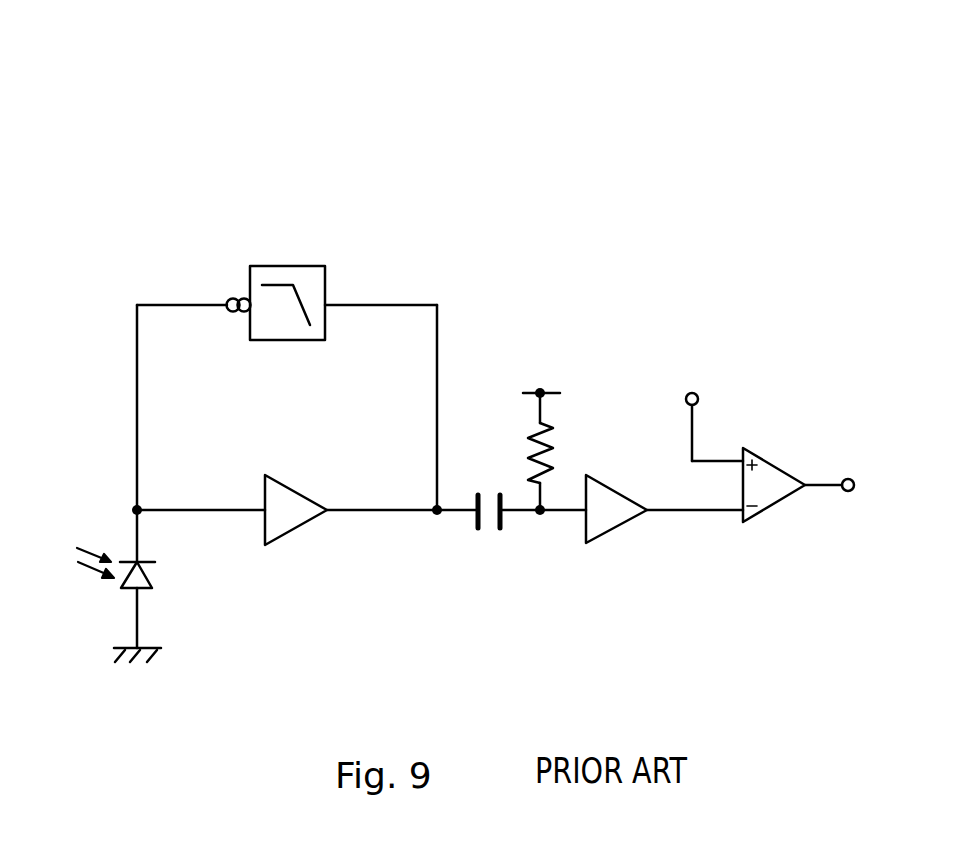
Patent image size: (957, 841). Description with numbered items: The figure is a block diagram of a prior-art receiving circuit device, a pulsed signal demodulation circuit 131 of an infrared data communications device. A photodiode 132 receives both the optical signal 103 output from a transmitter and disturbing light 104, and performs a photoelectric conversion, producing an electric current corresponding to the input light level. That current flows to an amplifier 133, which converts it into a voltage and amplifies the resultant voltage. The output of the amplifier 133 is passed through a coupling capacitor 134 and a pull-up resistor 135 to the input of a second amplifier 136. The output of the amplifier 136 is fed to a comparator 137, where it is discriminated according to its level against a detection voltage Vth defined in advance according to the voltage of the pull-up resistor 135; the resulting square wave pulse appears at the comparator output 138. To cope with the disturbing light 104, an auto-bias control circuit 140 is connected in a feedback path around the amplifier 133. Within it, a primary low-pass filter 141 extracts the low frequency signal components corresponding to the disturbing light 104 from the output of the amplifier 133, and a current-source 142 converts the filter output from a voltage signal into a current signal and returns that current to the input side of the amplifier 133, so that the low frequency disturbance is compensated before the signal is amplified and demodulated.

The photodetection circuit 131 is at (168, 224).
The auto-bias control circuit 140 is at (310, 158).
The primary low-pass filter 141 is at (277, 265).
The current-source 142 is at (229, 298).
The optical signal 103 is at (84, 545).
The disturbing light 104 is at (96, 570).
The photodiode 132 is at (150, 578).
The amplifier 133 is at (303, 525).
The coupling capacitor 134 is at (507, 517).
The pull-up resistor 135 is at (553, 423).
The amplifier 136 is at (622, 527).
The comparator 137 is at (778, 502).
The comparator output 138 is at (850, 493).